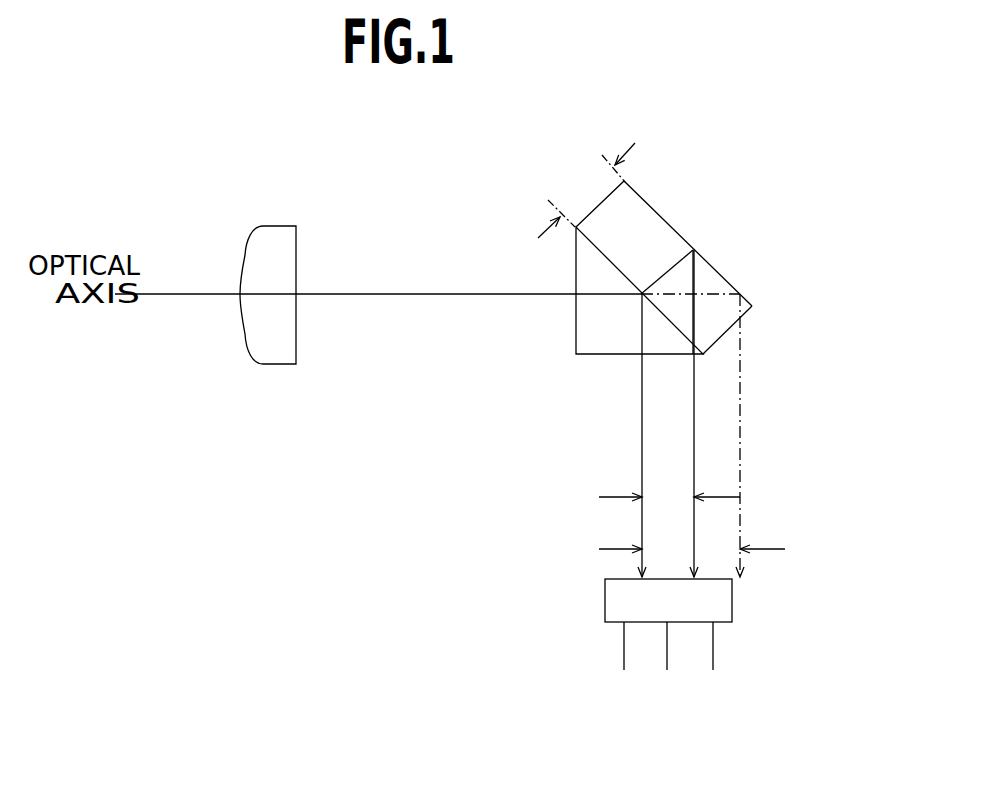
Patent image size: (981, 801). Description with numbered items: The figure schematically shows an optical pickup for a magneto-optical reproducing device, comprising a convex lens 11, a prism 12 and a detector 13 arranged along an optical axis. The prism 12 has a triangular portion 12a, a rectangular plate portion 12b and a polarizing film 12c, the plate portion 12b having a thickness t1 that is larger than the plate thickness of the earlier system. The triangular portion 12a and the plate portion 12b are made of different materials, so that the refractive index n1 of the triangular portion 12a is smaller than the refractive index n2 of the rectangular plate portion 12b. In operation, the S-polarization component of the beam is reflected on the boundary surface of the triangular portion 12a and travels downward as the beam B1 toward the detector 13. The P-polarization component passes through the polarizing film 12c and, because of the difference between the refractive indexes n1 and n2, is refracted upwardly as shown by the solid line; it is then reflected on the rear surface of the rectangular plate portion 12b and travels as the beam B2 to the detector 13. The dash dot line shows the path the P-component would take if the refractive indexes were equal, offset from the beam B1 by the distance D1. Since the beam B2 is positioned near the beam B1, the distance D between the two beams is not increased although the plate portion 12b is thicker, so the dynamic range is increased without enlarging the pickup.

The convex lens 11 is at (276, 240).
The prism 12 is at (618, 232).
The triangular portion 12a is at (583, 270).
The rectangular plate portion 12b is at (710, 280).
The polarizing film 12c is at (602, 252).
The detector 13 is at (732, 597).
The thickness of the plate portion t1 is at (586, 190).
The refractive index of the triangular portion n1 is at (595, 335).
The refractive index of the rectangular plate portion n2 is at (714, 322).
The beam of the S-polarization component B1 is at (642, 430).
The beam of the P-polarization component B2 is at (694, 415).
The distance between the beams D is at (662, 495).
The beam offset distance D1 is at (712, 552).